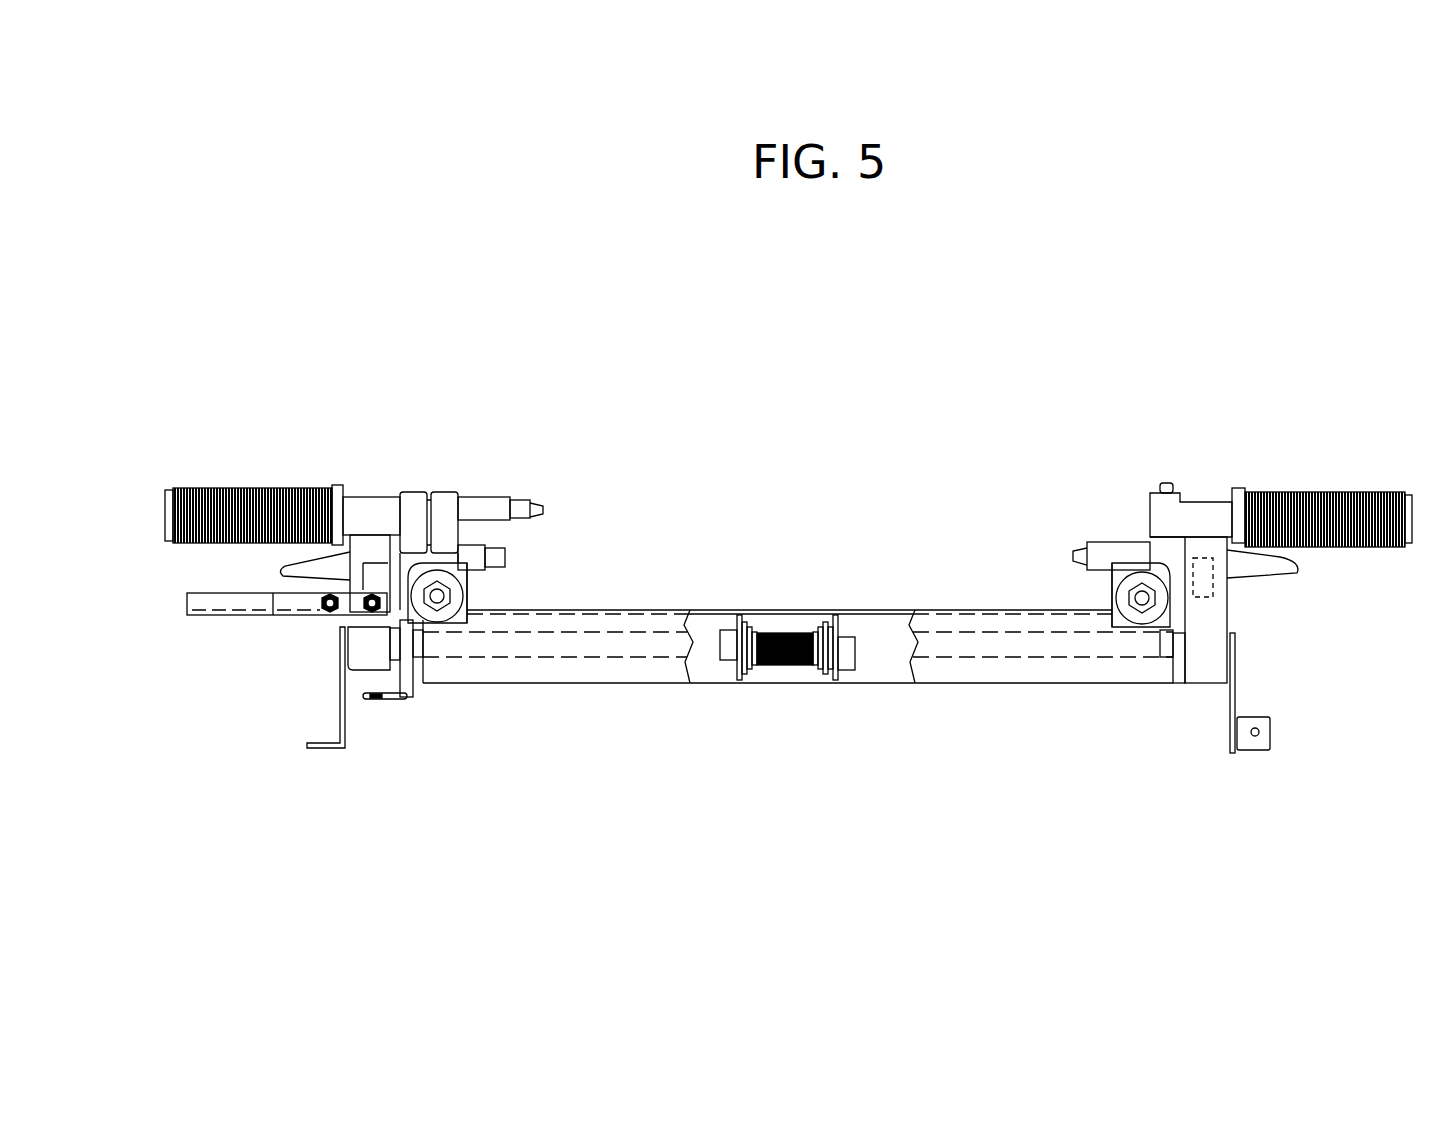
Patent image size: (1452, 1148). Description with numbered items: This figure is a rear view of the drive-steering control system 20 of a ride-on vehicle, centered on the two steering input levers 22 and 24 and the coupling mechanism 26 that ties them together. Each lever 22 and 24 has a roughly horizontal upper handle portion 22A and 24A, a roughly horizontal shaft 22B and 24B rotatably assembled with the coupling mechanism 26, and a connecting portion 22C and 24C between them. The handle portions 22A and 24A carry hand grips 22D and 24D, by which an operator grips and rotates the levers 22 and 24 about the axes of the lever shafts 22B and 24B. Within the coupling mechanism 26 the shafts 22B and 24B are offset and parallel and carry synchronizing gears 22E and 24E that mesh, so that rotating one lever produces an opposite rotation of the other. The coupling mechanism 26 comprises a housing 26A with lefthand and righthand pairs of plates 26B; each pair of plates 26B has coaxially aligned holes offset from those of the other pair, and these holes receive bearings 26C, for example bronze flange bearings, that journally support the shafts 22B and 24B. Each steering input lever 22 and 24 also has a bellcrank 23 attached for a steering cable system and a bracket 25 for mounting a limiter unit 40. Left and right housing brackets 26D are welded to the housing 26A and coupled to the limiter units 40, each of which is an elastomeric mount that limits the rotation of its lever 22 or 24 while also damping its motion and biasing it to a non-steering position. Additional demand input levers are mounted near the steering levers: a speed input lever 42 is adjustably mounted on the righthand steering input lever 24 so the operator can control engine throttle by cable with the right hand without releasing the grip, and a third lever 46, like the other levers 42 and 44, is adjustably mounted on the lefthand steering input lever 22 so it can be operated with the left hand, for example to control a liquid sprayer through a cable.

The handlebar assembly 20 is at (810, 388).
The steering input lever 22 is at (368, 412).
The upper handle portion 22A is at (370, 512).
The lever shaft 22B is at (552, 652).
The connecting portion 22C is at (330, 605).
The hand grip 22D is at (268, 492).
The synchronizing gear 22E is at (764, 640).
The bellcrank 23 is at (315, 748).
The steering input lever 24 is at (1313, 423).
The upper handle portion 24A is at (1203, 513).
The lever shaft 24B is at (1015, 660).
The connecting portion 24C is at (1223, 603).
The hand grip 24D is at (1357, 493).
The synchronizing gear 24E is at (813, 665).
The bracket 25 is at (355, 557).
The coupling mechanism 26 is at (618, 609).
The housing 26A is at (1017, 610).
The plates 26B is at (405, 690).
The bearings 26C is at (420, 650).
The housing bracket 26D is at (462, 617).
The limiter unit 40 is at (460, 560).
The speed input lever 42 is at (1297, 568).
The lever 44 is at (543, 512).
The third lever 46 is at (505, 557).